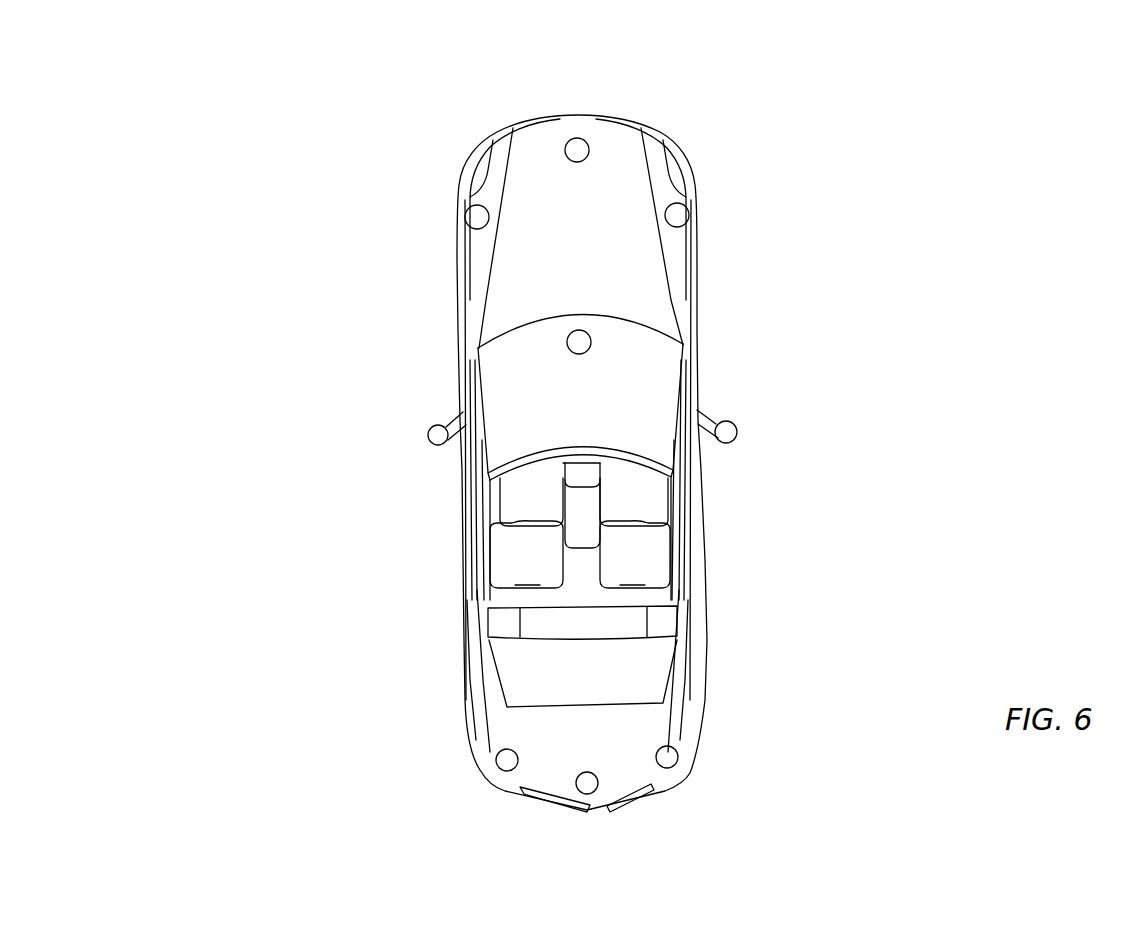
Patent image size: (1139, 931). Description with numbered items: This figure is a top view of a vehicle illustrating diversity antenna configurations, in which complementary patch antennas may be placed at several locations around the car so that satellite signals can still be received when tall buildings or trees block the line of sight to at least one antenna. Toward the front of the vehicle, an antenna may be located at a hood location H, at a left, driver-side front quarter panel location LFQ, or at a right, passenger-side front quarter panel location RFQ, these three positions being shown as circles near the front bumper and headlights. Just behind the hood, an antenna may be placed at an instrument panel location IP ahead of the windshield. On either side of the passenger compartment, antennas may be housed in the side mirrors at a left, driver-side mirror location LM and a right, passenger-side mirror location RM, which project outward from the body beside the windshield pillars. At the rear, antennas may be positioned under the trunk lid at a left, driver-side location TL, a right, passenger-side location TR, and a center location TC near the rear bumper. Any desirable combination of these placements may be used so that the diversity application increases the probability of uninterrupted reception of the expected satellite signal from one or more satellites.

The hood location H is at (588, 142).
The left, driver-side front quarter panel location LFQ is at (468, 212).
The right, passenger-side front quarter panel location RFQ is at (687, 211).
The instrument panel location IP is at (590, 340).
The left, driver-side mirror location LM is at (428, 428).
The right, passenger-side mirror location RM is at (738, 424).
The left, driver-side trunk location TL is at (492, 773).
The right, passenger-side trunk location TR is at (690, 770).
The trunk center location TC is at (605, 801).